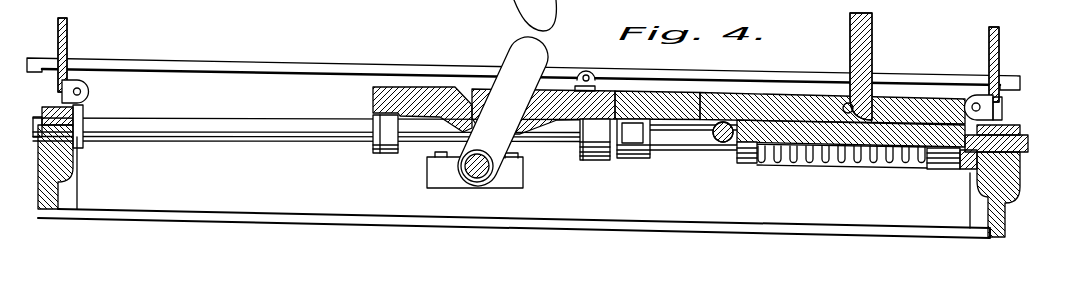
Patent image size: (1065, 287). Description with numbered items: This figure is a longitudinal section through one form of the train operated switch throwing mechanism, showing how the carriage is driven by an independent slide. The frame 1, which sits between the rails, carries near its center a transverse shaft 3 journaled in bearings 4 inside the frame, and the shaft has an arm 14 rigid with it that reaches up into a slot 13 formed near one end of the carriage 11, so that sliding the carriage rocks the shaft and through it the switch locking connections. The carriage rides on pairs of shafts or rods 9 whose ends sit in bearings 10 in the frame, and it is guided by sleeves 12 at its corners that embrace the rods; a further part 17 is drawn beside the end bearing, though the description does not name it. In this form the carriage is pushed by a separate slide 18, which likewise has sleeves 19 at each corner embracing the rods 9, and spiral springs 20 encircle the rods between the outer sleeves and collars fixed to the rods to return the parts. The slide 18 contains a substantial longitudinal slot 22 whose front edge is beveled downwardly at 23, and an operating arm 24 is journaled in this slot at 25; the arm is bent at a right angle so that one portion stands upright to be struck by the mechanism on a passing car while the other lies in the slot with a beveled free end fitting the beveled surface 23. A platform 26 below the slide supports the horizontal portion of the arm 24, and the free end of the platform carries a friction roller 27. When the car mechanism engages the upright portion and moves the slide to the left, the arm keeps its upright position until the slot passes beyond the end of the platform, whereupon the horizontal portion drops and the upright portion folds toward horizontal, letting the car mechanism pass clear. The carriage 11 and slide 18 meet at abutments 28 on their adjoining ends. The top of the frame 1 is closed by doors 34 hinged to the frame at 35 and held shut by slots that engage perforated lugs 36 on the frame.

The frame 1 is at (292, 58).
The transverse shaft 3 is at (495, 168).
The bearings 4 is at (428, 180).
The shafts or rods 9 is at (107, 133).
The bearings 10 is at (48, 107).
The carriage 11 is at (410, 90).
The sleeves 12 is at (390, 153).
The slot 13 is at (482, 102).
The arm 14 is at (507, 93).
The plate 17 is at (83, 113).
The slide 18 is at (640, 97).
The sleeves 19 is at (637, 160).
The spiral springs 20 is at (850, 158).
The longitudinal slot 22 is at (873, 121).
The beveled edge 23 is at (775, 107).
The operating arm 24 is at (800, 100).
The journal 25 is at (870, 110).
The platform 26 is at (803, 150).
The friction roller 27 is at (722, 142).
The abutments 28 is at (606, 122).
The doors 34 is at (68, 48).
The hinges 35 is at (78, 87).
The perforated lugs 36 is at (592, 65).